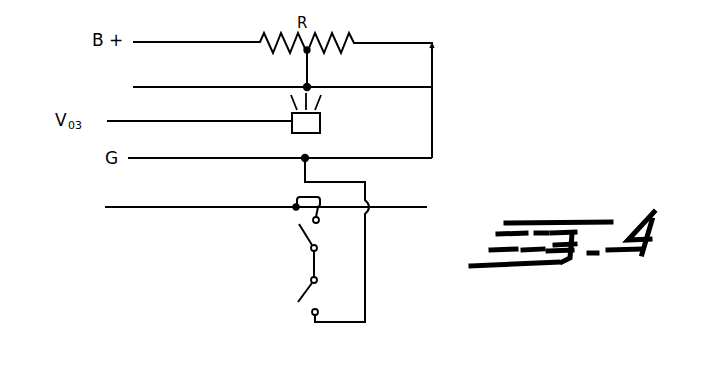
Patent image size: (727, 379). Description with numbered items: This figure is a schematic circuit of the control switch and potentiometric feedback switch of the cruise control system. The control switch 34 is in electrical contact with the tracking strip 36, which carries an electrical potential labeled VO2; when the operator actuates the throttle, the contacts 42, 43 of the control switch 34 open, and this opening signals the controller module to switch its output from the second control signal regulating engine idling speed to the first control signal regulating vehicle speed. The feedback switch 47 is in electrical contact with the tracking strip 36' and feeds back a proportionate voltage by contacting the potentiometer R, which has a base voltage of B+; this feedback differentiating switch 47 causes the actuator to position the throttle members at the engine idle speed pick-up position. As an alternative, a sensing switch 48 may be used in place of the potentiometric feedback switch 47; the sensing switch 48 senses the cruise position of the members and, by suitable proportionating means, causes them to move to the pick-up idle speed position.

The control switch 34 is at (301, 196).
The tracking strip 36 is at (242, 220).
The tracking strip 36' is at (261, 77).
The contacts 42 is at (298, 236).
The contacts 43 is at (311, 221).
The feedback switch 47 is at (308, 60).
The sensing switch 48 is at (320, 121).